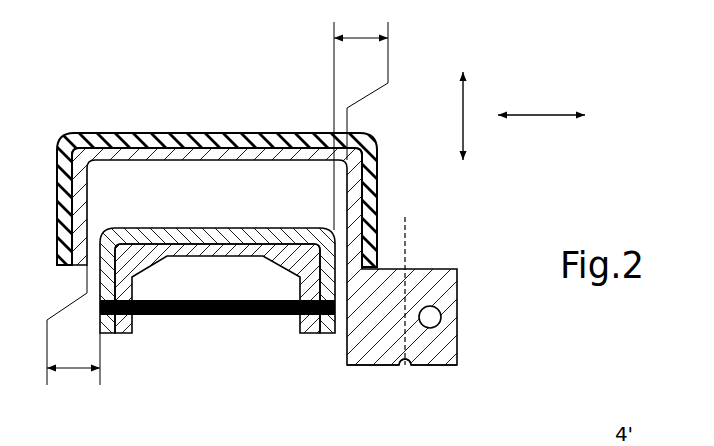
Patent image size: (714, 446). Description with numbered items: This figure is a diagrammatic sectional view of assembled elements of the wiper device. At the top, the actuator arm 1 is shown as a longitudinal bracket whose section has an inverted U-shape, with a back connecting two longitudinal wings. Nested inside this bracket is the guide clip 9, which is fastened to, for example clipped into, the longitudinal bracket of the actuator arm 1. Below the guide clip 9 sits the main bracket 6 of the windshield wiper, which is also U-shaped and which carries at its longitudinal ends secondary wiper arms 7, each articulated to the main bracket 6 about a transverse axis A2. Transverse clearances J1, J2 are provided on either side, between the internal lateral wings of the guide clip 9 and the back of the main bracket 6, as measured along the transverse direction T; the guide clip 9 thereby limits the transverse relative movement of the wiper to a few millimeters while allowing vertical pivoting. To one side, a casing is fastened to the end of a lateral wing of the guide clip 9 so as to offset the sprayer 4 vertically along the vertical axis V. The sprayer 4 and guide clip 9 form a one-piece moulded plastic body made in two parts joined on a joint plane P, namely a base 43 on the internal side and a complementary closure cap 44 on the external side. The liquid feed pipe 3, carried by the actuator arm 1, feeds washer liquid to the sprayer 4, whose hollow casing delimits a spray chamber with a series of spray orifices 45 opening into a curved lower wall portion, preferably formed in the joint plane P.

The actuator arm 1 is at (217, 164).
The guide clip 9 is at (233, 143).
The sprayer 4 is at (295, 289).
The base 43 is at (368, 353).
The closure cap 44 is at (443, 365).
The spray orifices 45 is at (407, 367).
The liquid feed pipe 3 is at (436, 318).
The main bracket 6 is at (190, 236).
The secondary wiper arms 7 is at (258, 246).
The transverse axis A2 is at (199, 318).
The joint plane P is at (405, 258).
The transverse clearance J1 is at (73, 335).
The transverse clearance J2 is at (361, 117).
The vertical axis V is at (450, 116).
The transverse direction T is at (541, 102).